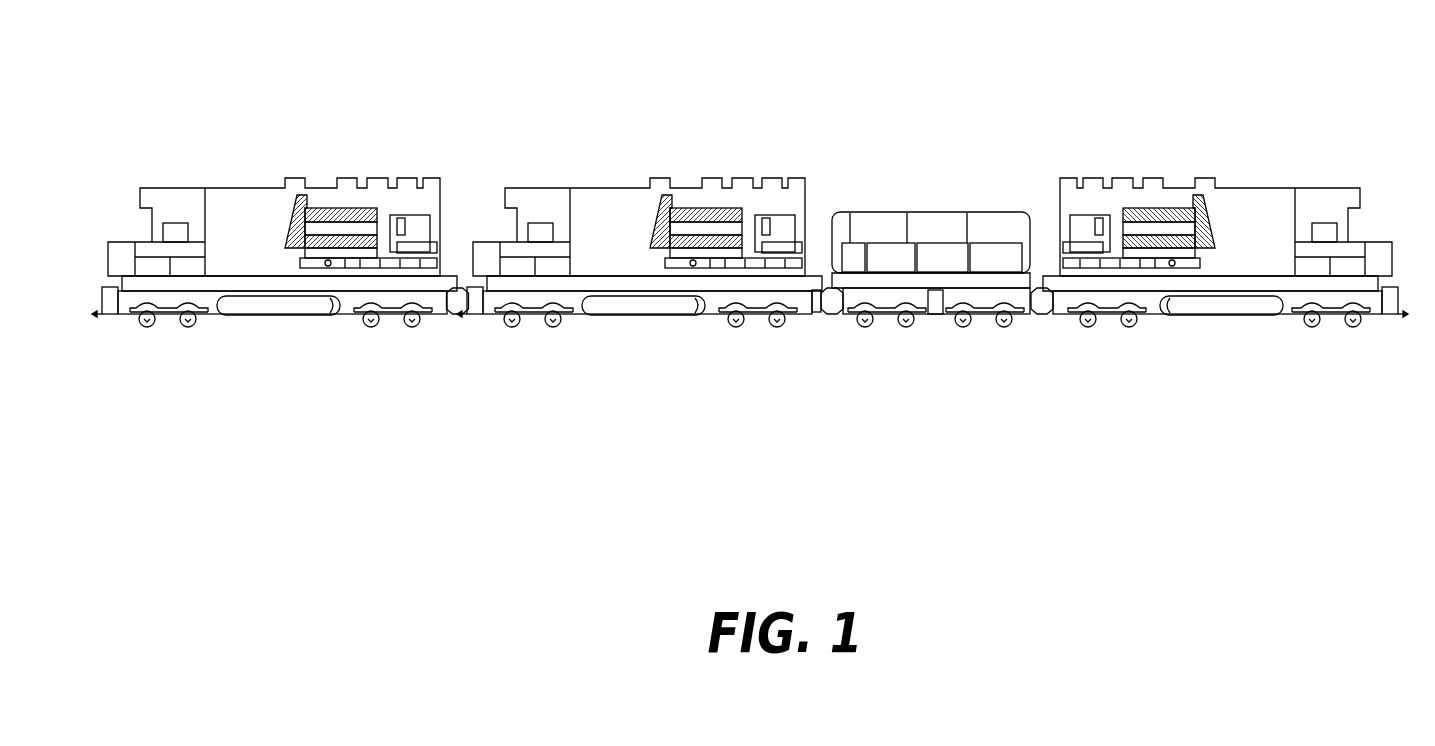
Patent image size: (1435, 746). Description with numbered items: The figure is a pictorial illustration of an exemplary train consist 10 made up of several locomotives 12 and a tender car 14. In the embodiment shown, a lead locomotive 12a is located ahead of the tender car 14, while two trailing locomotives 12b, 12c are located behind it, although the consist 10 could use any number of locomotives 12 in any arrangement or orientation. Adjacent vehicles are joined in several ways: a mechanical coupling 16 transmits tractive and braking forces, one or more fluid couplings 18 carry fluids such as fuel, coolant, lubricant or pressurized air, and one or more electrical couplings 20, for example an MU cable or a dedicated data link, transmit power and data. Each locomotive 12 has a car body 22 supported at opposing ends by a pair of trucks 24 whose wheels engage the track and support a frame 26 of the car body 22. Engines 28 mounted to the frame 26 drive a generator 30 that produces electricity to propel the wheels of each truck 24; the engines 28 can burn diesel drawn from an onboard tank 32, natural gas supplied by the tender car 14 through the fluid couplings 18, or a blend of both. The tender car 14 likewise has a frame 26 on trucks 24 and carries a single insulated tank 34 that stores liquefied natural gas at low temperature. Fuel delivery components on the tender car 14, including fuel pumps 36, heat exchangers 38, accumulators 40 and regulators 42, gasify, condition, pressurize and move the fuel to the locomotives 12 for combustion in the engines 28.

The train consist 10 is at (310, 588).
The locomotives 12 is at (372, 48).
The lead locomotive 12a is at (460, 399).
The trailing locomotive 12b is at (830, 398).
The trailing locomotive 12c is at (1406, 393).
The tender car 14 is at (939, 301).
The mechanical coupling 16 is at (455, 318).
The fluid couplings 18 is at (453, 268).
The electrical couplings 20 is at (459, 280).
The car body 22 is at (440, 190).
The trucks 24 is at (173, 328).
The frame 26 is at (218, 320).
The engines 28 is at (333, 187).
The generator 30 is at (404, 195).
The tank 32 is at (322, 318).
The tank 34 is at (985, 213).
The fuel pumps 36 is at (850, 213).
The heat exchangers 38 is at (905, 213).
The accumulators 40 is at (968, 213).
The regulators 42 is at (1008, 213).